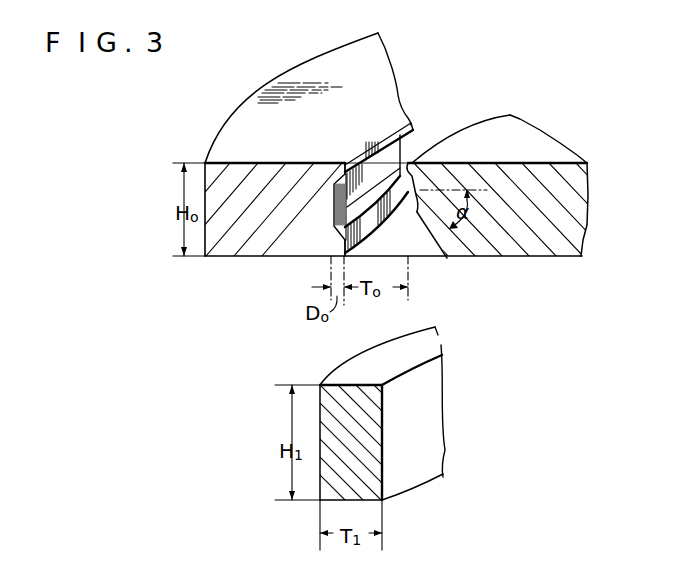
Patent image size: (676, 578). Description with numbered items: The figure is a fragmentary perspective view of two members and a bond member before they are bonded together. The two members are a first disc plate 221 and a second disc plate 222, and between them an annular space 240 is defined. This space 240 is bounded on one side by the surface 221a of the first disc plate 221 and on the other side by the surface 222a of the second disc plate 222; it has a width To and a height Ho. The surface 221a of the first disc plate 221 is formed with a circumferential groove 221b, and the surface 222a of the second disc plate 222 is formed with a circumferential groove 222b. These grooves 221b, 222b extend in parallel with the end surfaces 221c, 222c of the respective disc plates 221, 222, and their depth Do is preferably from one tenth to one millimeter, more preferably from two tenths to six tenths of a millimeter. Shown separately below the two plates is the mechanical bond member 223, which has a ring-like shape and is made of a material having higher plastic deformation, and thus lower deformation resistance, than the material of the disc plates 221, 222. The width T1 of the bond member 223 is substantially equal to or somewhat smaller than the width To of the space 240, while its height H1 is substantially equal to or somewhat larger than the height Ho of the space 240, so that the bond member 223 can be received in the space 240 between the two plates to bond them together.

The first disc plate 221 is at (257, 105).
The surface of the first disc plate 221a is at (413, 121).
The circumferential groove 221b is at (322, 256).
The end surface of the first disc plate 221c is at (302, 157).
The second disc plate 222 is at (540, 250).
The surface of the second disc plate 222a is at (411, 162).
The circumferential groove 222b is at (447, 258).
The end surface of the second disc plate 222c is at (525, 157).
The annular space 240 is at (404, 253).
The mechanical bond member 223 is at (427, 473).